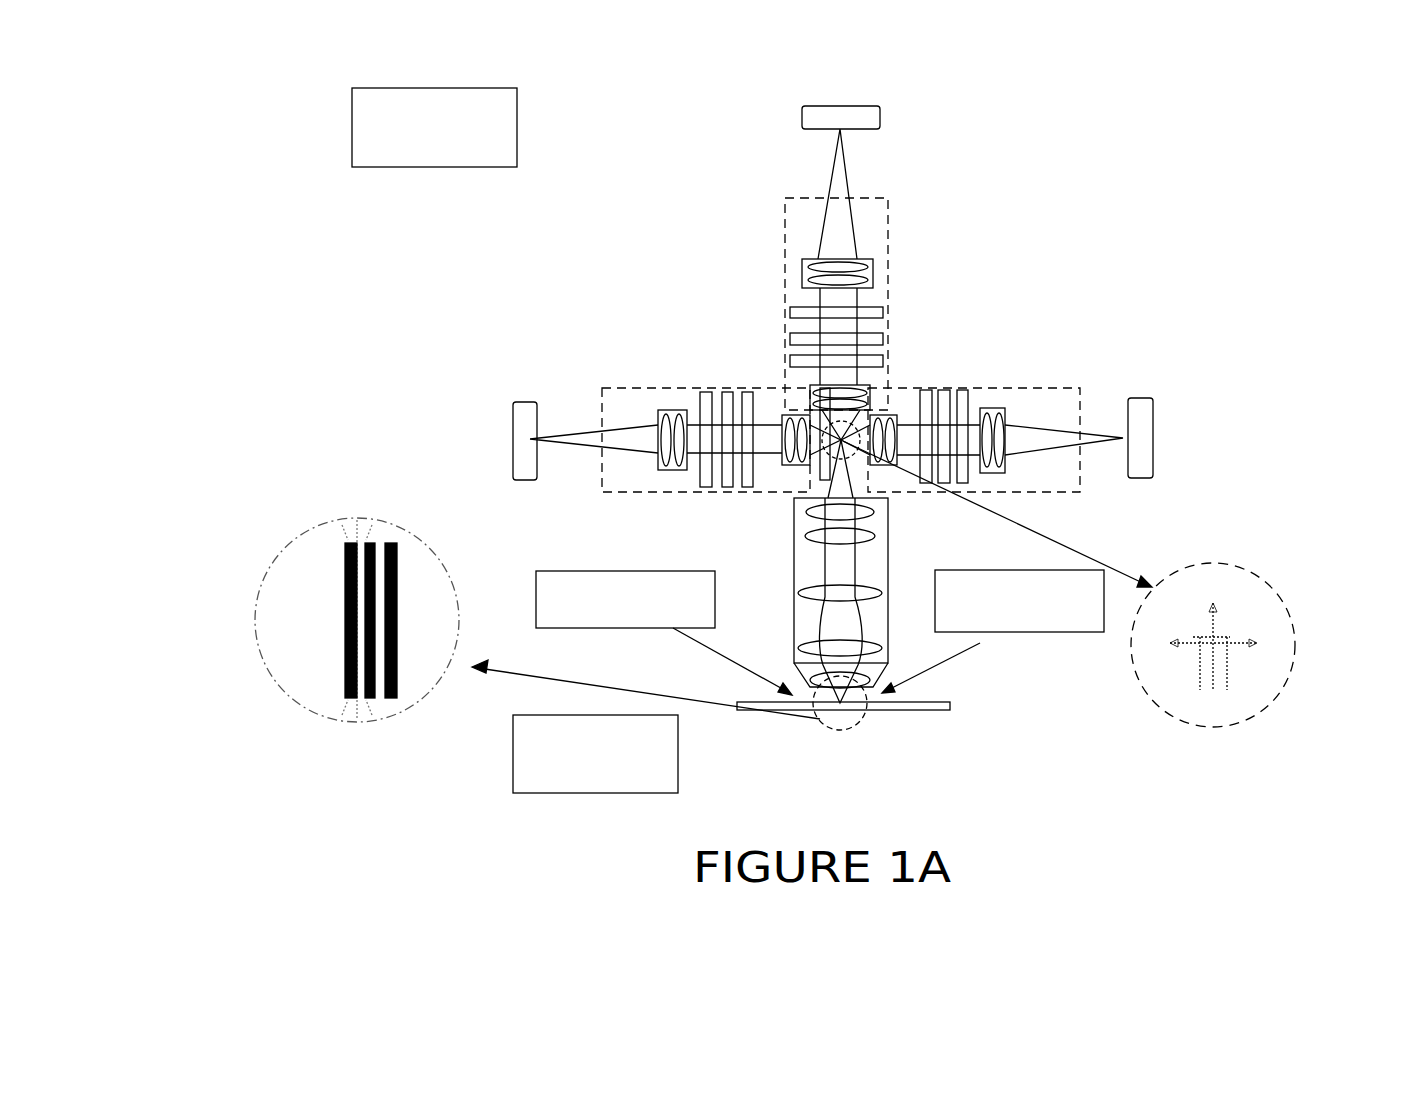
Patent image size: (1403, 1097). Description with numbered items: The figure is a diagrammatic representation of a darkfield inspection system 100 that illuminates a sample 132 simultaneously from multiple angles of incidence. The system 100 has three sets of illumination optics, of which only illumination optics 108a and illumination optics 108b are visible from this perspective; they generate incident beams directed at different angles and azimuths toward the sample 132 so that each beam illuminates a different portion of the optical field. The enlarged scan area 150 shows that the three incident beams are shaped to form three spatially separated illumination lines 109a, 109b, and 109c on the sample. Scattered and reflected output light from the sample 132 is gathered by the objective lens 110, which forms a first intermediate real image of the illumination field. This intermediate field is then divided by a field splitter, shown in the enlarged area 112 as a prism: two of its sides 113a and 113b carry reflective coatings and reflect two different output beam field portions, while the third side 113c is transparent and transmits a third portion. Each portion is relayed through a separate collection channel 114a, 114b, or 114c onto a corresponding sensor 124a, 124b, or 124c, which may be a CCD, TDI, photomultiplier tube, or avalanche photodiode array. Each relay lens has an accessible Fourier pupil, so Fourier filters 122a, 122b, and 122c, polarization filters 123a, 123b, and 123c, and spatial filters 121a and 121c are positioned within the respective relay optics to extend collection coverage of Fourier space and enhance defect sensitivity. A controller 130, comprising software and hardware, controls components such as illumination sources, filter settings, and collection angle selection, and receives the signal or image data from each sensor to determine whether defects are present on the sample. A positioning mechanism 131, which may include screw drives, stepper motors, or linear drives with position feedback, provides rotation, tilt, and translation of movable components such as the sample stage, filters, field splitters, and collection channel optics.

The inspection system 100 is at (1218, 101).
The controller 130 is at (517, 124).
The sensor 124a is at (520, 415).
The sensor 124b is at (1137, 410).
The sensor 124c is at (848, 116).
The collection channel 114a is at (607, 388).
The collection channel 114b is at (1078, 392).
The collection channel 114c is at (890, 230).
The polarization filter 123a is at (705, 392).
The polarization filter 123b is at (970, 397).
The polarization filter 123c is at (886, 300).
The Fourier filter 122a is at (727, 392).
The Fourier filter 122b is at (942, 388).
The Fourier filter 122c is at (883, 330).
The spatial filter 121a is at (748, 392).
The spatial filter 121c is at (883, 357).
The objective lens 110 is at (794, 570).
The illumination optics 108a is at (605, 570).
The illumination optics 108b is at (942, 580).
The enlarged area 112 is at (1240, 568).
The prism side 113a is at (1230, 643).
The prism side 113b is at (1233, 633).
The prism side 113c is at (1213, 650).
The enlarged scan area 150 is at (258, 597).
The illumination line 109a is at (347, 577).
The illumination line 109b is at (395, 588).
The illumination line 109c is at (367, 540).
The positioning mechanism 131 is at (610, 793).
The sample 132 is at (905, 710).